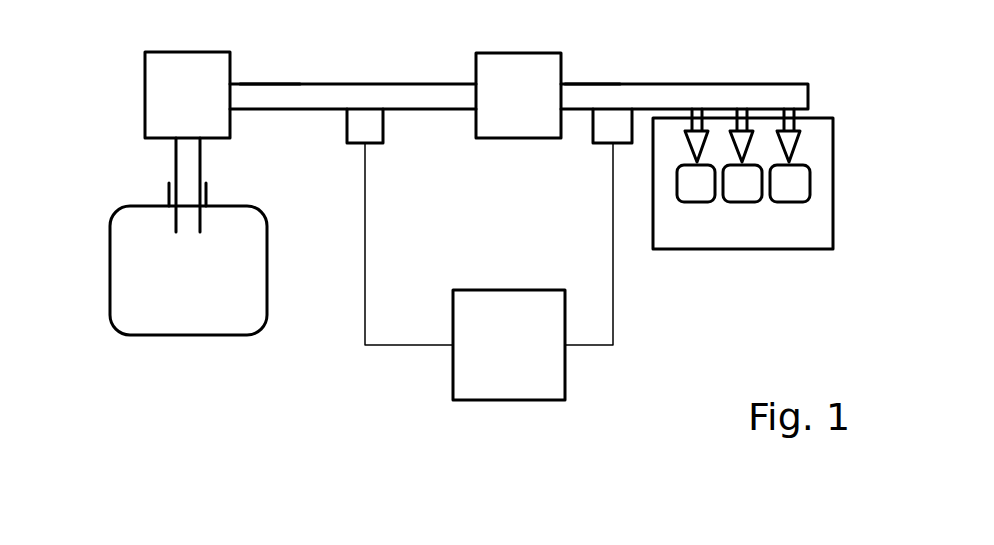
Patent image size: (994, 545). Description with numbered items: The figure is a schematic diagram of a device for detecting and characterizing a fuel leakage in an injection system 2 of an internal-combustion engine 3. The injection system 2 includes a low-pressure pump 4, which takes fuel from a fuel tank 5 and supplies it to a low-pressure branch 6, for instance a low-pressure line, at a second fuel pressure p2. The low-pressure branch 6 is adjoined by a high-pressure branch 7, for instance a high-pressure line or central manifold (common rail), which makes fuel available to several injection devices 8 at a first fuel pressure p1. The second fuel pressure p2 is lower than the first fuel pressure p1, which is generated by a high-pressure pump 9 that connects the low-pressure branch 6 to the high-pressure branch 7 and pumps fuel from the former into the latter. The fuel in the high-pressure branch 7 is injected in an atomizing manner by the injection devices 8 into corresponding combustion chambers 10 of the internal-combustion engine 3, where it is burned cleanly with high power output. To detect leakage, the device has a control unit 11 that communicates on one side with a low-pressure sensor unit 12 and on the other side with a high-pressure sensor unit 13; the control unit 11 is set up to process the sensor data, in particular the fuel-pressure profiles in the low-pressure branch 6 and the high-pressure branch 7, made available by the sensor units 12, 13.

The injection system 2 is at (845, 55).
The internal-combustion engine 3 is at (833, 182).
The low-pressure pump 4 is at (187, 95).
The fuel tank 5 is at (267, 285).
The low-pressure branch 6 is at (369, 46).
The high-pressure branch 7 is at (704, 48).
The injection devices 8 is at (797, 138).
The high-pressure pump 9 is at (518, 95).
The combustion chambers 10 is at (693, 203).
The control unit 11 is at (489, 271).
The low-pressure sensor unit 12 is at (347, 135).
The high-pressure sensor unit 13 is at (593, 143).
The first fuel pressure p1 is at (580, 93).
The second fuel pressure p2 is at (289, 95).